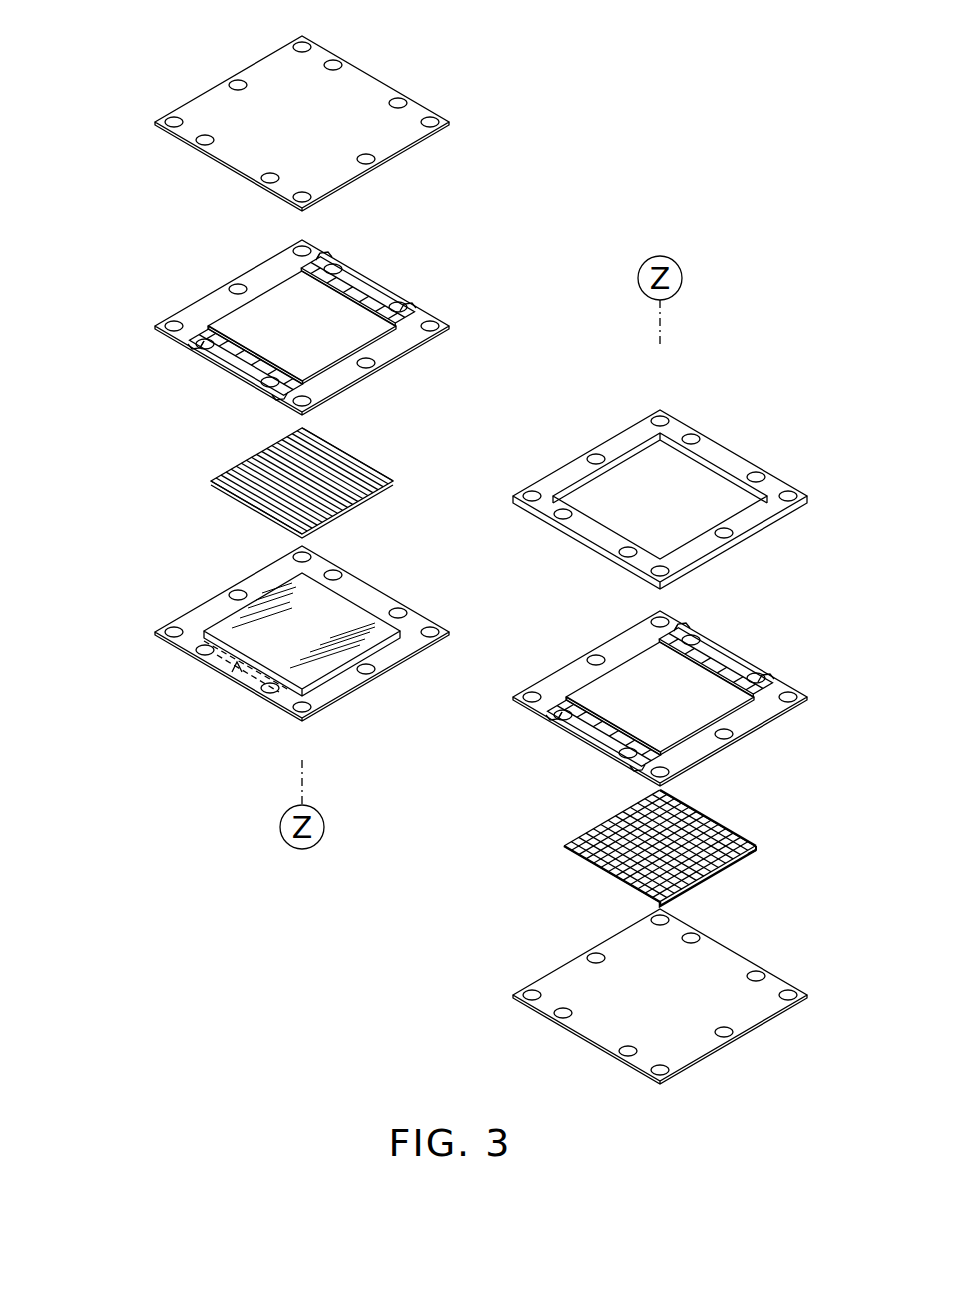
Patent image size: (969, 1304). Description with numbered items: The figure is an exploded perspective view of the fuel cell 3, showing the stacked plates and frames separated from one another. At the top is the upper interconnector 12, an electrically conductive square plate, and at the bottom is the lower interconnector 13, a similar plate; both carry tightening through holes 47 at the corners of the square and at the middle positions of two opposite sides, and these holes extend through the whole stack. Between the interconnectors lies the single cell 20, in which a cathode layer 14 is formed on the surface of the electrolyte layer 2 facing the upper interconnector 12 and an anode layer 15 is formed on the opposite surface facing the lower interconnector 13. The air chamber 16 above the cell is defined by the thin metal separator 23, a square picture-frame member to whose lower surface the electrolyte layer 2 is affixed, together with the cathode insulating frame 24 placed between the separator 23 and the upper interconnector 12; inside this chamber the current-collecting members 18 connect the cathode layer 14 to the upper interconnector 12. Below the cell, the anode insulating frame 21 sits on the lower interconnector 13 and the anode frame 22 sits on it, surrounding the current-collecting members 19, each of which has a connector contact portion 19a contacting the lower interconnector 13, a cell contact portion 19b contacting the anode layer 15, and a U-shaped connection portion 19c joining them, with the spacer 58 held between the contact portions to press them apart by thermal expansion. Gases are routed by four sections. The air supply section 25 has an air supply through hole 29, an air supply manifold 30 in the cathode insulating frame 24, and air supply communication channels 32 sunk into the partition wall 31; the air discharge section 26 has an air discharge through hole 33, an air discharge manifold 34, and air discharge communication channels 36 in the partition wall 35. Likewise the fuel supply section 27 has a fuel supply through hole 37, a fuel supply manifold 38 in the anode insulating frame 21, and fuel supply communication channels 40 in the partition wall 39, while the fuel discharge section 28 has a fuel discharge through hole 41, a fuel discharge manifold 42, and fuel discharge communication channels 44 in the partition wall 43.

The fuel cell 3 is at (620, 118).
The electrolyte layer 2 is at (200, 648).
The upper interconnector 12 is at (353, 87).
The lower interconnector 13 is at (718, 950).
The cathode layer 14 is at (333, 608).
The anode layer 15 is at (262, 690).
The air chamber 16 is at (378, 333).
The current-collecting members 18 is at (362, 462).
The current-collecting members 19 is at (562, 845).
The connector contact portion 19a is at (725, 870).
The cell contact portion 19b is at (734, 830).
The connection portion 19c is at (755, 836).
The single cell 20 is at (235, 672).
The anode gas channel forming insulating frame 21 is at (765, 722).
The anode frame 22 is at (770, 522).
The separator 23 is at (398, 648).
The cathode gas channel forming insulating frame 24 is at (208, 304).
The air supply section 25 is at (393, 298).
The air discharge section 26 is at (248, 370).
The fuel supply section 27 is at (737, 660).
The fuel discharge section 28 is at (568, 736).
The air supply through hole 29 is at (696, 933).
The air supply manifold 30 is at (325, 262).
The partition wall 31 is at (330, 272).
The air supply communication channels 32 is at (368, 314).
The air discharge through hole 33 is at (625, 1057).
The air discharge manifold 34 is at (200, 368).
The partition wall 35 is at (272, 355).
The air discharge communication channels 36 is at (236, 340).
The fuel supply through hole 37 is at (761, 971).
The fuel supply manifold 38 is at (688, 636).
The partition wall 39 is at (672, 650).
The fuel supply communication channels 40 is at (715, 682).
The fuel discharge through hole 41 is at (560, 1019).
The fuel discharge manifold 42 is at (605, 746).
The partition wall 43 is at (598, 712).
The fuel discharge communication channels 44 is at (620, 735).
The tightening through holes 47 is at (726, 1038).
The spacer 58 is at (592, 830).